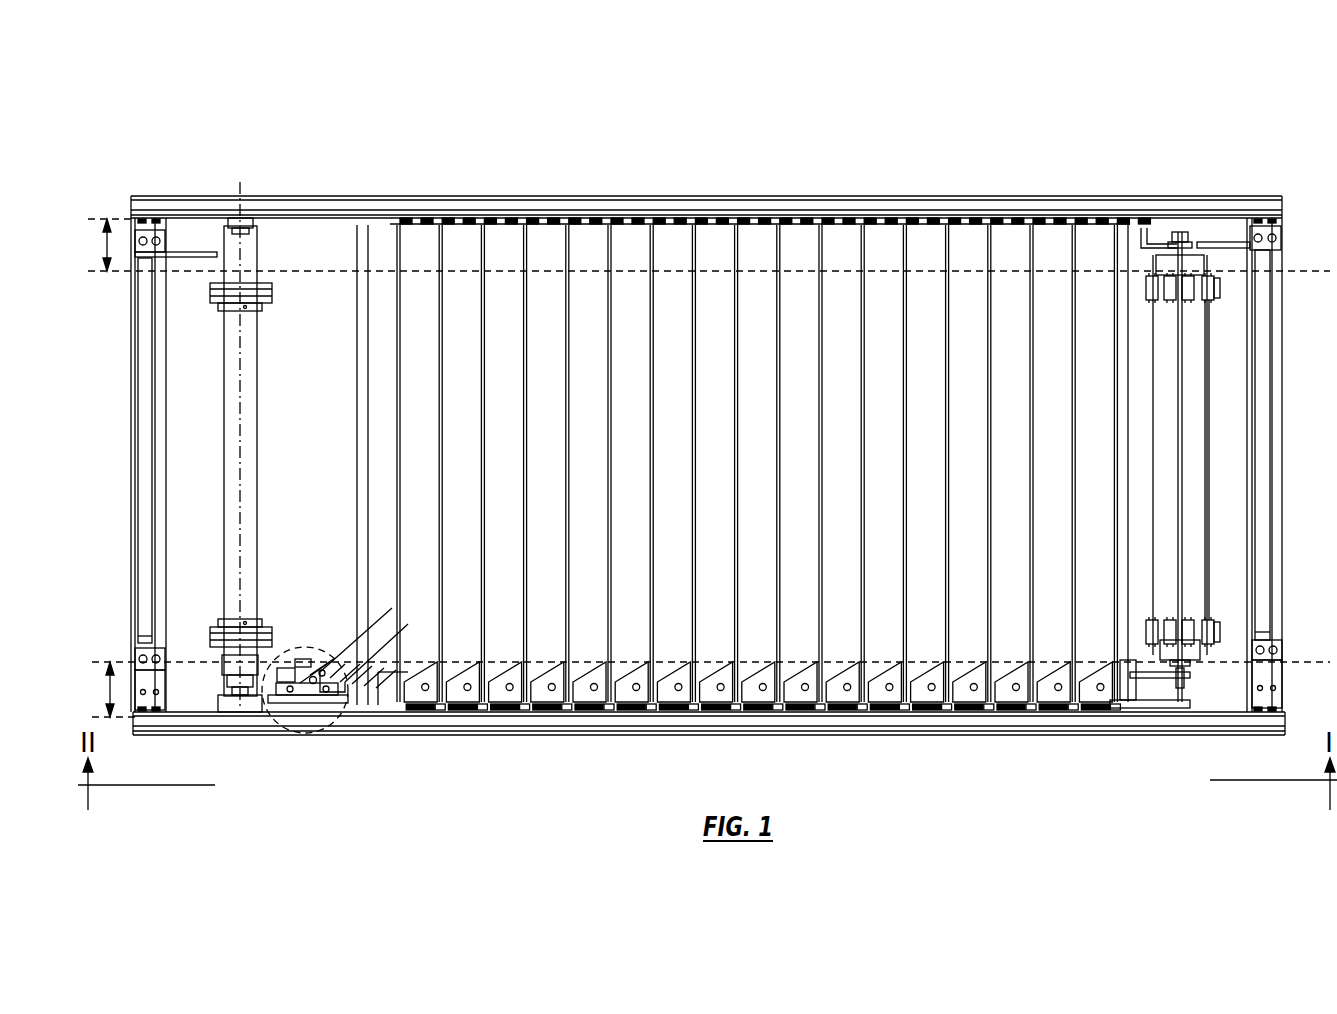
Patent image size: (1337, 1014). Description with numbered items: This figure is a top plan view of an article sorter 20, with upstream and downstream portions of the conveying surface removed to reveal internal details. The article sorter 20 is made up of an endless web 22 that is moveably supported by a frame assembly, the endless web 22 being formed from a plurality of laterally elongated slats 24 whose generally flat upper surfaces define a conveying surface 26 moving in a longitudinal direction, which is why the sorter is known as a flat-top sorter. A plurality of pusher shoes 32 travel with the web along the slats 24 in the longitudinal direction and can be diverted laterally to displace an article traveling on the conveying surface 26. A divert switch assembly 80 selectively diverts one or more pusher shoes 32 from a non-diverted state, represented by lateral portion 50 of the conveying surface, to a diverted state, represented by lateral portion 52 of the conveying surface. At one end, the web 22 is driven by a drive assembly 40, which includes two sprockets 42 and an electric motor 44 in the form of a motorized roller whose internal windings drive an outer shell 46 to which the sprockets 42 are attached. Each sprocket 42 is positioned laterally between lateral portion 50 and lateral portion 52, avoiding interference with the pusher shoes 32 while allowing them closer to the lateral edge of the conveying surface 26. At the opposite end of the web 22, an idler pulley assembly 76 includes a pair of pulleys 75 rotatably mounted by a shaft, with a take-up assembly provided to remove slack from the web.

The article sorter 20 is at (1050, 188).
The endless web 22 is at (622, 190).
The slats 24 is at (415, 237).
The conveying surface 26 is at (682, 422).
The pusher shoes 32 is at (432, 665).
The drive assembly 40 is at (1220, 380).
The sprocket 42 is at (1222, 290).
The electric motor 44 is at (1208, 512).
The outer shell 46 is at (1208, 553).
The lateral portion of the conveying surface 50 is at (100, 692).
The lateral portion of the conveying surface 52 is at (98, 248).
The pulleys 75 is at (272, 292).
The idler pulley assembly 76 is at (268, 528).
The divert switch assembly 80 is at (298, 740).